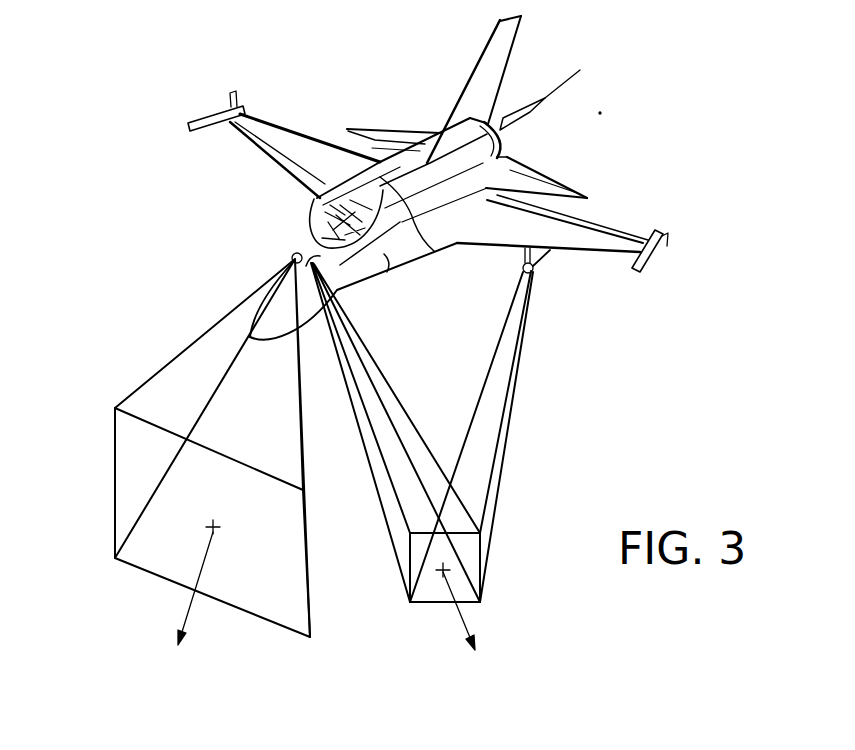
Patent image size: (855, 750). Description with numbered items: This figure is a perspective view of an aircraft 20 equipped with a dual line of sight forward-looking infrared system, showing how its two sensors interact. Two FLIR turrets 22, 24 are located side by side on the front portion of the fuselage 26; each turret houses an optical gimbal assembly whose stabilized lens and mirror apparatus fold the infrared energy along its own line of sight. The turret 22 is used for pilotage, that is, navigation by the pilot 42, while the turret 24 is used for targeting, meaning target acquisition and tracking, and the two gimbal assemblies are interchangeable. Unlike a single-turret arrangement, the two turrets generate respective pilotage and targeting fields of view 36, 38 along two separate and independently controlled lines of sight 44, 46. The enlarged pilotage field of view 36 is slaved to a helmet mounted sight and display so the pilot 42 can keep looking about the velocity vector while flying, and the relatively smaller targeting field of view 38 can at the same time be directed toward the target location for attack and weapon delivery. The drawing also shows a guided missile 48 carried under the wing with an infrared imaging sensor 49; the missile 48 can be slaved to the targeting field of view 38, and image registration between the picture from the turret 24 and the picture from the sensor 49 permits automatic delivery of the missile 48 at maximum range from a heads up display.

The aircraft 20 is at (372, 88).
The forward-looking infrared turret 22 is at (291, 251).
The forward-looking infrared turret 24 is at (338, 284).
The fuselage 26 is at (390, 268).
The pilotage field of view 36 is at (121, 439).
The targeting field of view 38 is at (473, 552).
The pilot 42 is at (316, 200).
The line of sight 44 is at (190, 608).
The line of sight 46 is at (473, 623).
The guided missile 48 is at (545, 250).
The infrared imaging sensor 49 is at (522, 268).